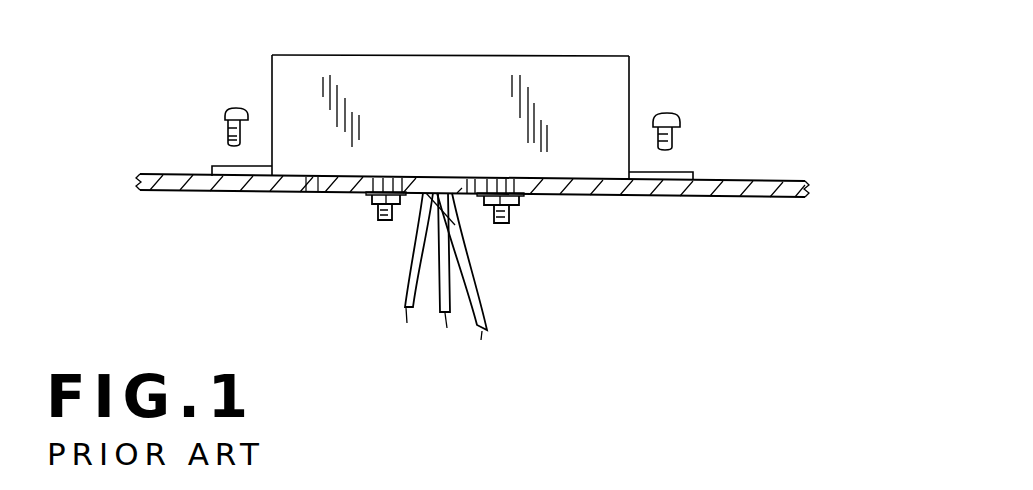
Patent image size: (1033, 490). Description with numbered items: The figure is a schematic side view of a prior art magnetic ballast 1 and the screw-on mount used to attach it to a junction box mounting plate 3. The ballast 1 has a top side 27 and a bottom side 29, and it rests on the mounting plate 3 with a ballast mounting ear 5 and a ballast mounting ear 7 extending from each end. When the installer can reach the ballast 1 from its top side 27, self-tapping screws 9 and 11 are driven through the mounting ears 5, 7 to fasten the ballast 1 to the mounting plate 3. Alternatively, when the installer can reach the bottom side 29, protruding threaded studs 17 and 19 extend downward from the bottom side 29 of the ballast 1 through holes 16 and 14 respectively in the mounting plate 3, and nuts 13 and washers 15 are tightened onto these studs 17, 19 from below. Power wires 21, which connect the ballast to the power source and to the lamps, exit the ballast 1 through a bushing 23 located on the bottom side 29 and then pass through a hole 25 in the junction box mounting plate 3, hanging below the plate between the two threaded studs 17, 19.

The magnetic ballast 1 is at (453, 97).
The top side of the ballast 27 is at (297, 53).
The junction box mounting plate 3 is at (733, 197).
The ballast mounting ear 5 is at (213, 165).
The ballast mounting ear 7 is at (685, 173).
The self-tapping screw 9 is at (230, 110).
The self-tapping screw 11 is at (670, 113).
The bottom side of the ballast 29 is at (298, 192).
The hole in the junction box mounting plate 16 is at (350, 195).
The washer 15 is at (367, 199).
The threaded stud 17 is at (380, 212).
The bushing 23 is at (413, 206).
The hole in the junction box mounting plate 14 is at (527, 187).
The nut 13 is at (521, 206).
The threaded stud 19 is at (504, 223).
The hole in the junction box mounting plate 25 is at (500, 275).
The power wires 21 is at (479, 296).